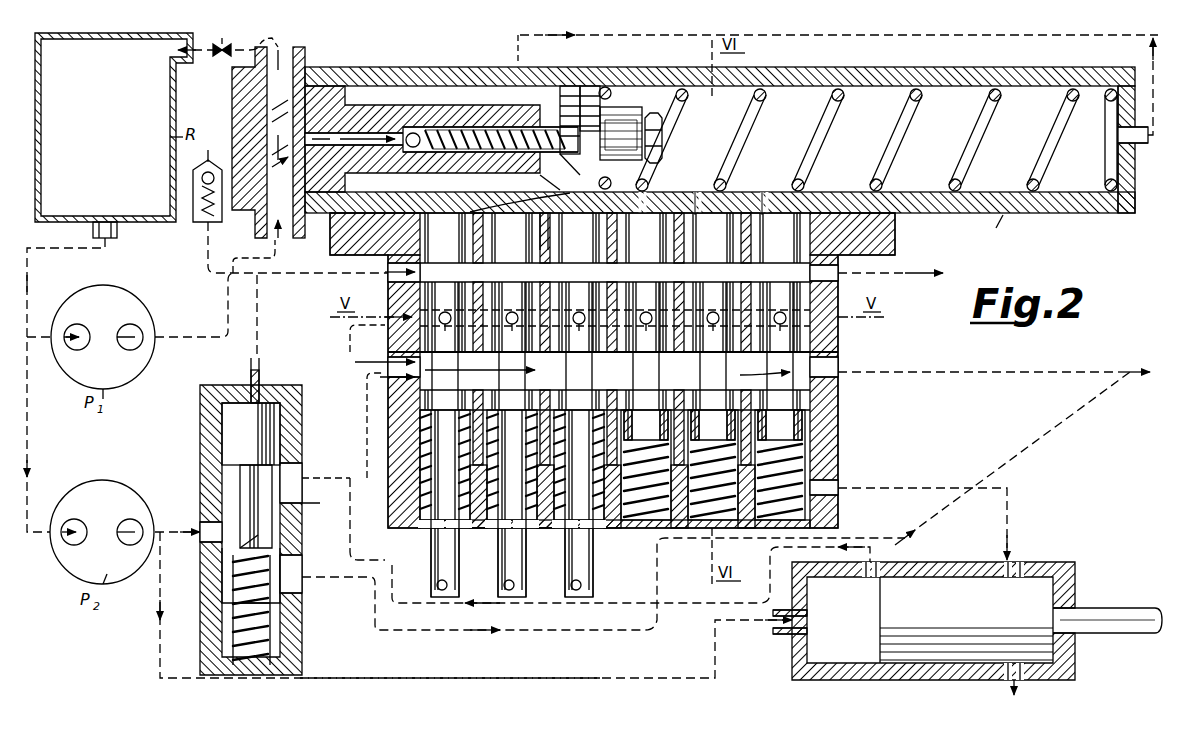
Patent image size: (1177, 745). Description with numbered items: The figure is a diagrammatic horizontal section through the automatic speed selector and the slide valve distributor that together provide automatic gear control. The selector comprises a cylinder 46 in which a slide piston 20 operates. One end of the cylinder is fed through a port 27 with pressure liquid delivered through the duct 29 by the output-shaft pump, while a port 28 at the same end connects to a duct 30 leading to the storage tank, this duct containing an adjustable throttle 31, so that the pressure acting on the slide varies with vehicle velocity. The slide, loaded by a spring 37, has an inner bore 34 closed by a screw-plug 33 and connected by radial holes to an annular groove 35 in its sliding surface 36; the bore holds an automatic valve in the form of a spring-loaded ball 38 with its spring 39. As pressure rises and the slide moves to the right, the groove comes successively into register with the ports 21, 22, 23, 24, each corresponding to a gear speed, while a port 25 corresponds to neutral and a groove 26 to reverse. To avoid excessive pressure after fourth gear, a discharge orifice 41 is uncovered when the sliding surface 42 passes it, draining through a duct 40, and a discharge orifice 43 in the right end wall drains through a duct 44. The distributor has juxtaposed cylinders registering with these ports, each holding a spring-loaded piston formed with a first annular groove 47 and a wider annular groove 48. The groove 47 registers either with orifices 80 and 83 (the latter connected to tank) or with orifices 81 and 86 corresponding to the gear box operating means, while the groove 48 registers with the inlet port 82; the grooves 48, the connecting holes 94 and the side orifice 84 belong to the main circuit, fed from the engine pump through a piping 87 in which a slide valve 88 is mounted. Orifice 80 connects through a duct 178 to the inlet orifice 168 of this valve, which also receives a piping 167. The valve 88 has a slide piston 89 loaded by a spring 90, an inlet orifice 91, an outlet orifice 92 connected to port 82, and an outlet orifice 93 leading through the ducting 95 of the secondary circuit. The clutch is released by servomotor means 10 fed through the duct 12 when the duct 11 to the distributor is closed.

The servomotor means 10 is at (960, 562).
The duct 11 is at (380, 558).
The duct 12 is at (443, 680).
The slide piston 20 is at (416, 173).
The port 21 is at (572, 214).
The port 22 is at (664, 168).
The port 23 is at (698, 196).
The port 24 is at (764, 196).
The port 25 is at (540, 178).
The groove 26 is at (500, 205).
The port 27 is at (256, 224).
The port 28 is at (318, 70).
The duct 29 is at (186, 337).
The duct 30 is at (282, 40).
The adjustable throttle 31 is at (220, 58).
The screw-plug 33 is at (664, 138).
The inner bore 34 is at (368, 128).
The annular groove 35 is at (569, 86).
The sliding surface 36 is at (594, 86).
The spring 37 is at (748, 140).
The spring-loaded ball 38 is at (415, 130).
The spring 39 is at (452, 128).
The duct 40 is at (688, 45).
The discharge orifice 41 is at (512, 66).
The sliding surface 42 is at (338, 96).
The discharge orifice 43 is at (1104, 135).
The duct 44 is at (1142, 145).
The cylinder 46 is at (918, 67).
The first annular groove 47 is at (395, 285).
The wider annular groove 48 is at (420, 380).
The orifice 80 is at (398, 270).
The orifice 81 is at (390, 327).
The inlet port 82 is at (355, 363).
The orifice 83 is at (838, 275).
The channel 84 is at (838, 362).
The orifices 86 is at (613, 341).
The piping 87 is at (180, 532).
The slide valve 88 is at (210, 447).
The slide piston 89 is at (230, 420).
The spring 90 is at (232, 622).
The inlet orifice 91 is at (205, 547).
The outlet orifice 92 is at (302, 468).
The outlet orifice 93 is at (302, 586).
The connecting holes 94 is at (1010, 372).
The ducting 95 is at (1026, 430).
The piping 167 is at (205, 240).
The inlet orifice 168 is at (250, 373).
The duct 178 is at (322, 277).